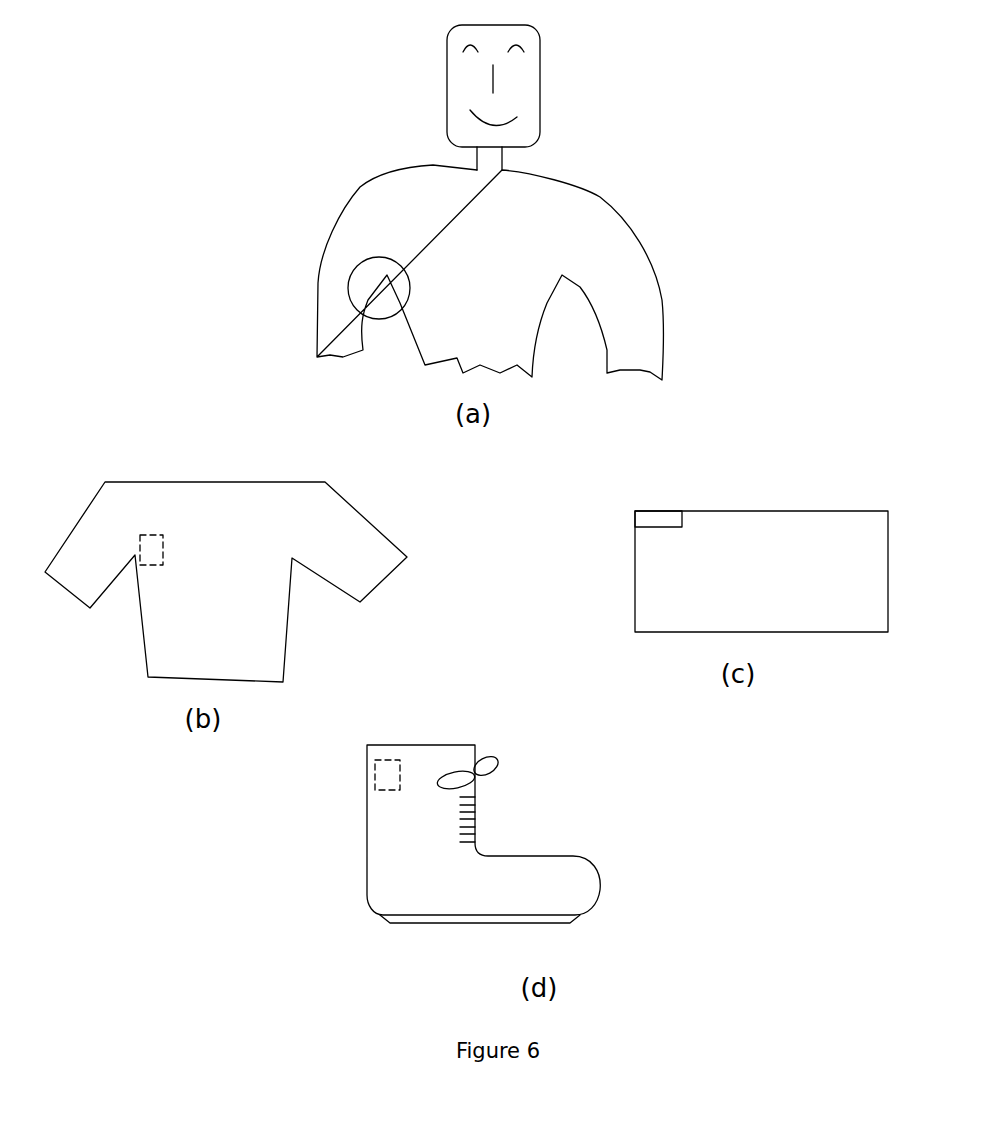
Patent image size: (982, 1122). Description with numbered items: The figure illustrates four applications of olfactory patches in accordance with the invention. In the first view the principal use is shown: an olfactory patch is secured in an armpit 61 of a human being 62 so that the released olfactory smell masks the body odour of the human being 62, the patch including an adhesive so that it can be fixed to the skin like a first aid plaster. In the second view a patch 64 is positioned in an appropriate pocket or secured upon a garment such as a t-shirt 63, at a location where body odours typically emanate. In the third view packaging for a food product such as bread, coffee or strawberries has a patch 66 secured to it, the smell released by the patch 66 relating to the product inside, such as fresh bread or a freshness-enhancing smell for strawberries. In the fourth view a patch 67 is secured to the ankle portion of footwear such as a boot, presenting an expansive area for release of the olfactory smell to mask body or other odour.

The armpit 61 is at (363, 275).
The human being 62 is at (562, 207).
The t-shirt 63 is at (297, 520).
The patch 64 is at (147, 547).
The patch 66 is at (667, 518).
The patch 67 is at (382, 772).